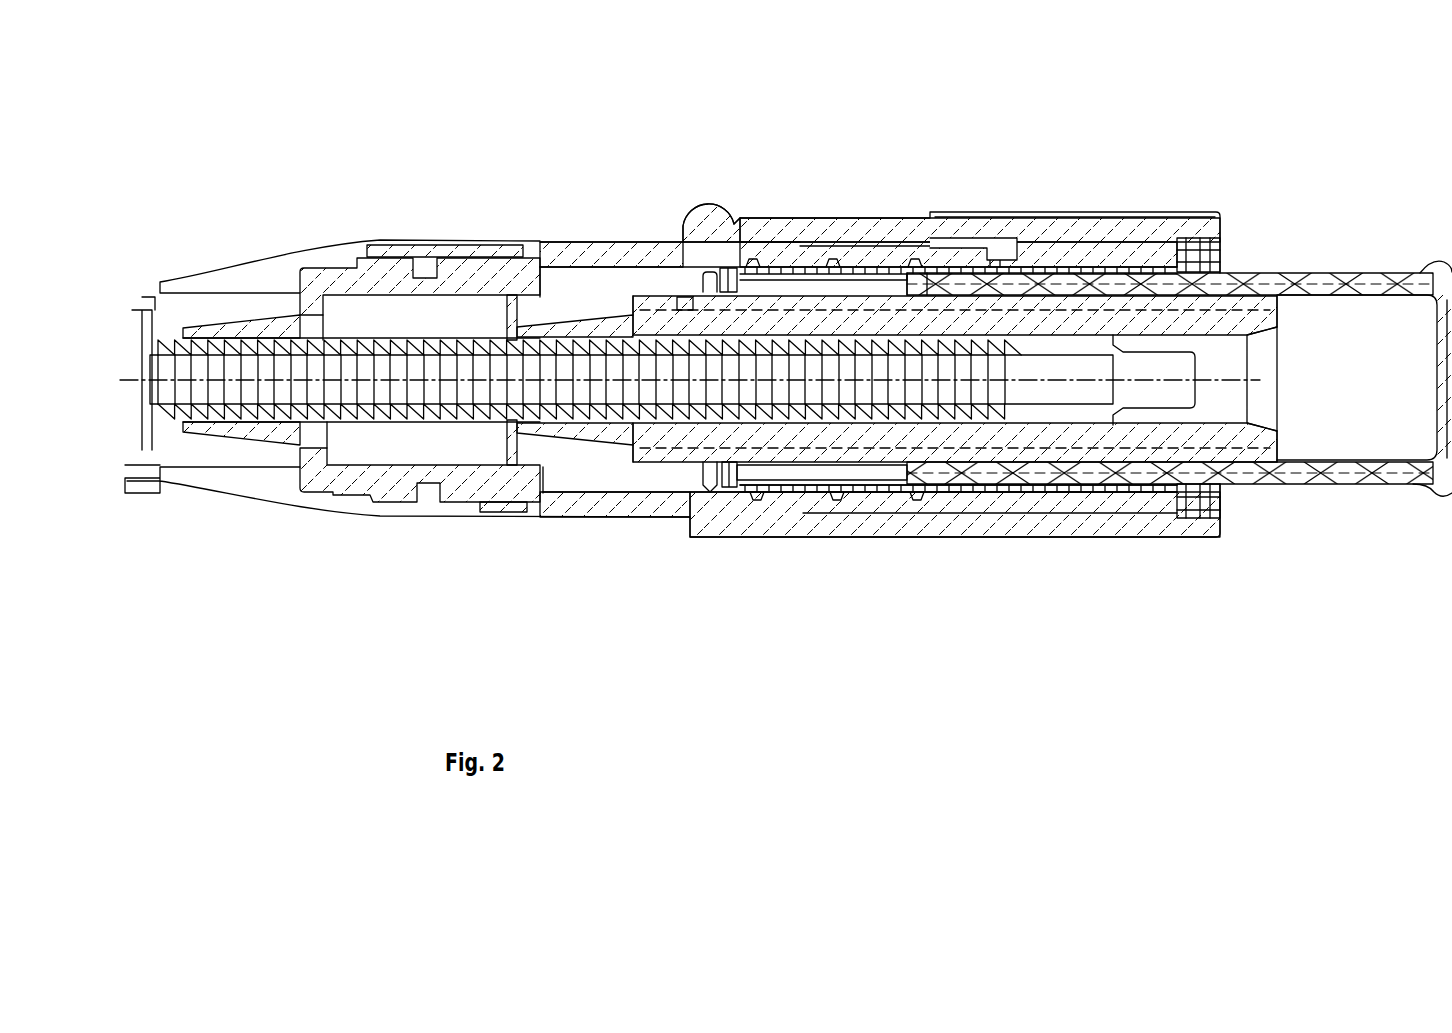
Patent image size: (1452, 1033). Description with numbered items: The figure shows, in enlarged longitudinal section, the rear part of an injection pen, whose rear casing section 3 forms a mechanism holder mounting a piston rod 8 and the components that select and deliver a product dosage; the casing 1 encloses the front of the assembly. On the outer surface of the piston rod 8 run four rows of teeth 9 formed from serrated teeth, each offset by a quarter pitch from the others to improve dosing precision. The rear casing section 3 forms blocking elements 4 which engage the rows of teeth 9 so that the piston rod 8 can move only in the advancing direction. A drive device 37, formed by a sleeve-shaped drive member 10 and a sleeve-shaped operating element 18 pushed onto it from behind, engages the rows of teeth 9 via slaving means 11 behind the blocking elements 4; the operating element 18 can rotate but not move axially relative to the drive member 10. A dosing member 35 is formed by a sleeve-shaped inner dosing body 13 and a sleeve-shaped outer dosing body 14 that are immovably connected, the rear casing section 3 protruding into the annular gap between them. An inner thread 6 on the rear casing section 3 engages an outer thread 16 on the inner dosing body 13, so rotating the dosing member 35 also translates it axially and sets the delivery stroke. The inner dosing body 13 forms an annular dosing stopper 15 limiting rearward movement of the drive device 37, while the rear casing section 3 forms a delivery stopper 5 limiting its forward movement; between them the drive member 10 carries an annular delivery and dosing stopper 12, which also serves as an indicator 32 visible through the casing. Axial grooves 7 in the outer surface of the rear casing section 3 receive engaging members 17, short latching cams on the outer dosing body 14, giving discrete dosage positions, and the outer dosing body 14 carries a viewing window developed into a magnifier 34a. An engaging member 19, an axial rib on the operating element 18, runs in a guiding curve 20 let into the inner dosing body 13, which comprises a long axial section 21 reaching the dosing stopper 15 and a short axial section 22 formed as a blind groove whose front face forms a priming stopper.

The housing 1 is at (216, 278).
The rear casing section 3 is at (554, 242).
The blocking elements 4 is at (190, 427).
The delivery stopper 5 is at (550, 474).
The inner thread 6 is at (912, 262).
The axial grooves 7 is at (933, 512).
The piston rod 8 is at (374, 368).
The rows of teeth 9 is at (416, 334).
The drive member 10 is at (657, 455).
The slaving means 11 is at (512, 424).
The delivery and dosing stopper 12 is at (713, 272).
The inner dosing body 13 is at (1045, 267).
The outer dosing body 14 is at (1132, 230).
The dosing stopper 15 is at (730, 280).
The outer thread 16 is at (917, 262).
The engaging members 17 is at (962, 497).
The operating element 18 is at (1401, 470).
The engaging member 19 is at (1345, 275).
The guiding curve 20 is at (803, 482).
The long axial section 21 is at (803, 482).
The short axial section 22 is at (904, 482).
The indicator 32 is at (715, 506).
The magnifier 34a is at (706, 217).
The dosing member 35 is at (1095, 192).
The drive device 37 is at (1238, 500).